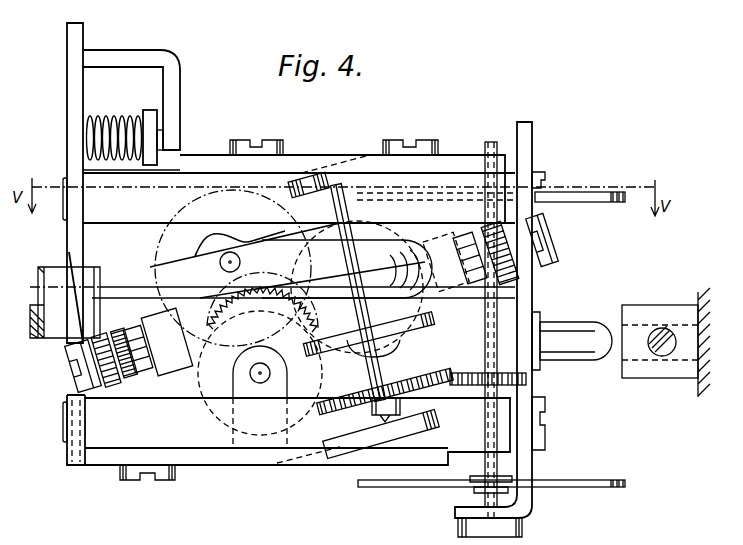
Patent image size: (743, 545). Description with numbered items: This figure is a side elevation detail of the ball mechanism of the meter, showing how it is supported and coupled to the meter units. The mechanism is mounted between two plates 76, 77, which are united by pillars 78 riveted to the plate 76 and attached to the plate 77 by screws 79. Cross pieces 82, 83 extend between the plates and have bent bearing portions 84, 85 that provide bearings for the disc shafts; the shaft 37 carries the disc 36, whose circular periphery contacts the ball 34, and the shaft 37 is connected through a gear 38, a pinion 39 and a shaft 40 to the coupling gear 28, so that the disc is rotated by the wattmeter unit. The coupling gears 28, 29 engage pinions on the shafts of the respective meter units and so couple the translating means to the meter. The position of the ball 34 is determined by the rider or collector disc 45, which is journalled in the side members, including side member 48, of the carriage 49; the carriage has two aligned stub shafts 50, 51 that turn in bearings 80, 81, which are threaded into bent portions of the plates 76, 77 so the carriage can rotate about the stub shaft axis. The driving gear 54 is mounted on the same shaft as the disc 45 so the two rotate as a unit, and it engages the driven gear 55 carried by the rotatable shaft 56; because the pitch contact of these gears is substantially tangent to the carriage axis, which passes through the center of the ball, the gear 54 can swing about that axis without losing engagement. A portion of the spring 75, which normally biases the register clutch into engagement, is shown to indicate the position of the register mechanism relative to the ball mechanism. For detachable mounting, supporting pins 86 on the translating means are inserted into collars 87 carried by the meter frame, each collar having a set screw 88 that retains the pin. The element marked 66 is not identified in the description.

The plate 76 is at (67, 137).
The spring 75 is at (137, 116).
The stop pin 66 is at (163, 137).
The pillars 78 is at (130, 218).
The cross piece 82 is at (326, 156).
The plate 77 is at (532, 133).
The screws 79 is at (545, 176).
The coupling gear 28 is at (612, 203).
The coupling gear 29 is at (606, 488).
The rider or collector disc 45 is at (262, 201).
The driving gear 54 is at (190, 219).
The carriage 49 is at (160, 277).
The ball 34 is at (431, 304).
The shaft 37 is at (333, 200).
The bent bearing portion 84 is at (292, 191).
The disc 36 is at (405, 333).
The gear 38 is at (445, 380).
The pinion 39 is at (472, 373).
The bent bearing portion 85 is at (430, 424).
The cross piece 83 is at (278, 463).
The side member 48 is at (205, 282).
The driven gear 55 is at (205, 381).
The rotatable shaft 56 is at (228, 400).
The stub shaft 50 is at (139, 345).
The bearing 80 is at (123, 378).
The stub shaft 51 is at (478, 244).
The bearing 81 is at (487, 232).
The shaft 40 is at (488, 460).
The supporting pin 86 is at (580, 322).
The collar 87 is at (663, 306).
The set screw 88 is at (668, 358).